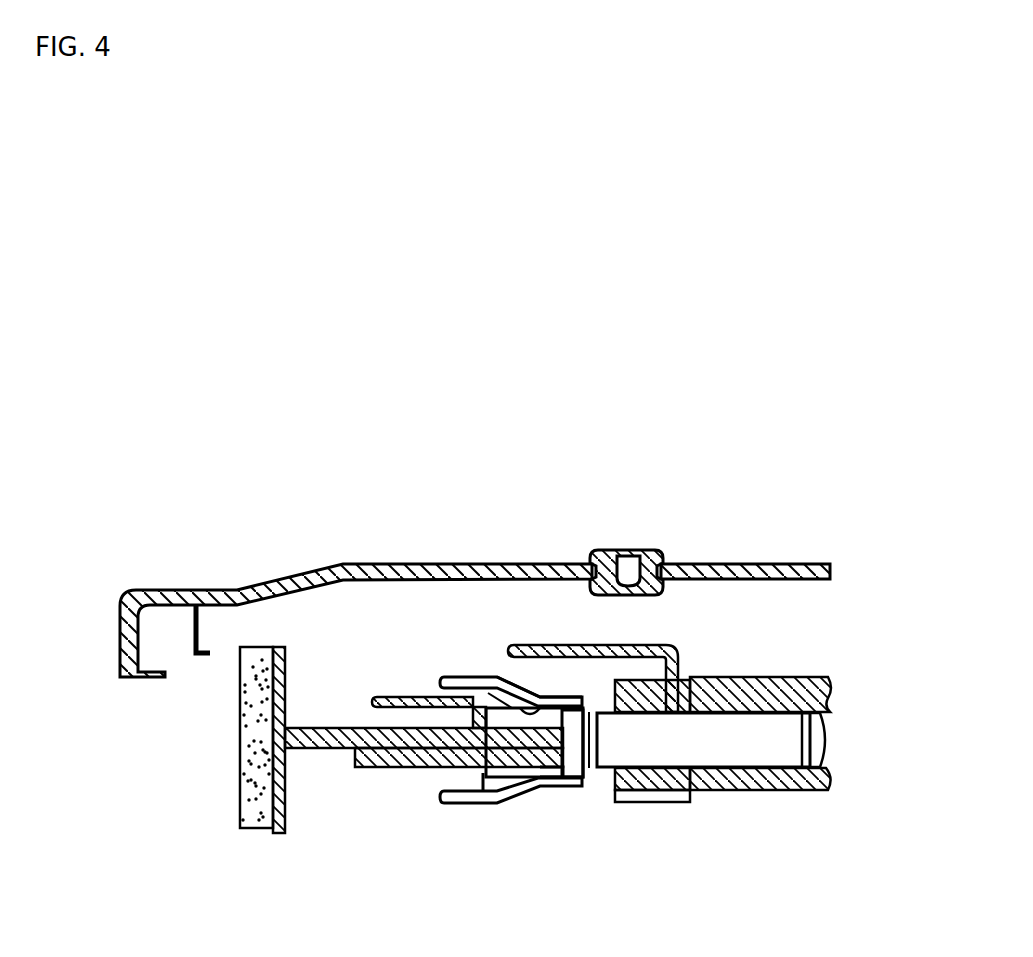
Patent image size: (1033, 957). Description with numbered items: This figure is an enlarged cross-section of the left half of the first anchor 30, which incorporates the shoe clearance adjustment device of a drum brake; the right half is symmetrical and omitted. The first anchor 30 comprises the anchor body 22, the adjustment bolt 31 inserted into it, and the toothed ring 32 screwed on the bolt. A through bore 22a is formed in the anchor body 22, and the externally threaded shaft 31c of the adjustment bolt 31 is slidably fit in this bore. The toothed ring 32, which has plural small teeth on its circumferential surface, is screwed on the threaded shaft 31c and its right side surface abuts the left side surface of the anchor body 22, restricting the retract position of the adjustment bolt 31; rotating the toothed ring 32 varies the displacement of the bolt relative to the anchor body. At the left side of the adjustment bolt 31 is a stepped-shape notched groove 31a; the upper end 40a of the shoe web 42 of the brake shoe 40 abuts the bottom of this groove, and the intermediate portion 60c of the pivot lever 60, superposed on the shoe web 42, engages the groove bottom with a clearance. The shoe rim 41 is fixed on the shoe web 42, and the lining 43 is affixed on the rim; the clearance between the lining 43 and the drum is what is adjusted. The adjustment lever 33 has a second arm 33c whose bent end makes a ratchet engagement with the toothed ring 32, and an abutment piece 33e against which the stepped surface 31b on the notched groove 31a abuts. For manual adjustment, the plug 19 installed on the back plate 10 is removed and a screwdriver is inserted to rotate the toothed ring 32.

The back plate 10 is at (455, 560).
The plug 19 is at (640, 552).
The anchor body 22 is at (758, 790).
The through bore 22a is at (820, 758).
The first anchor 30 is at (593, 798).
The adjustment bolt 31 is at (588, 780).
The notched groove 31a is at (547, 686).
The stepped surface 31b is at (430, 690).
The externally threaded shaft 31c is at (748, 735).
The toothed ring 32 is at (663, 803).
The adjustment lever 33 is at (377, 695).
The second arm 33c is at (630, 648).
The abutment piece 33e is at (497, 682).
The brake shoe 40 is at (227, 781).
The upper end of the shoe web 40a is at (490, 803).
The shoe rim 41 is at (296, 780).
The shoe web 42 is at (318, 748).
The lining 43 is at (240, 735).
The pivot lever 60 is at (404, 768).
The intermediate portion of the pivot lever 60c is at (548, 778).